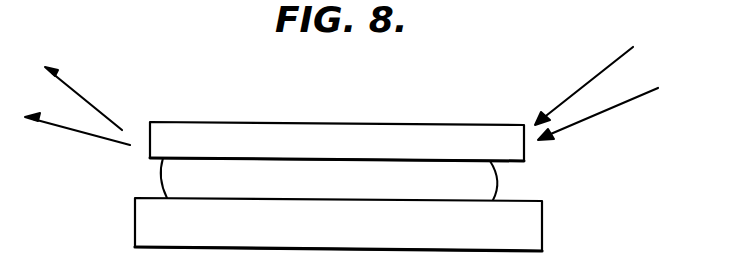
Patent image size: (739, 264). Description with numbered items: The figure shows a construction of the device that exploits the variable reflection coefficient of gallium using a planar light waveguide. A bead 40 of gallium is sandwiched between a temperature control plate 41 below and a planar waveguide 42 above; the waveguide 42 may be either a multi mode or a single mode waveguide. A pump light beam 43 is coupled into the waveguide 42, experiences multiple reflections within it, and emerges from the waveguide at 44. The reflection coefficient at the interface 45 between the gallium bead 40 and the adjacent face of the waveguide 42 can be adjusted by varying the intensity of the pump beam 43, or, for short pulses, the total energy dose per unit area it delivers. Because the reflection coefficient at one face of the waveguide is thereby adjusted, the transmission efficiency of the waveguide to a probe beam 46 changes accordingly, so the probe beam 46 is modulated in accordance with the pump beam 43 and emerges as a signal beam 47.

The bead of gallium 40 is at (480, 182).
The temperature control plate 41 is at (530, 226).
The planar waveguide 42 is at (298, 128).
The pump light beam 43 is at (608, 108).
The emerging pump beam location 44 is at (75, 133).
The interface 45 is at (231, 158).
The probe beam 46 is at (570, 95).
The signal beam 47 is at (80, 98).